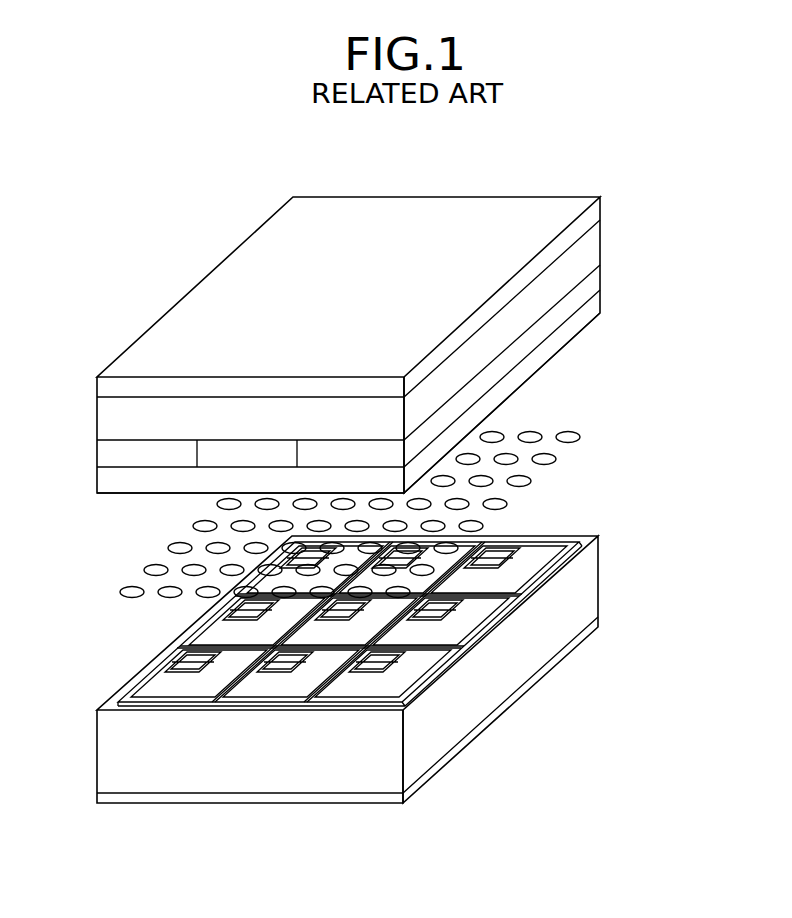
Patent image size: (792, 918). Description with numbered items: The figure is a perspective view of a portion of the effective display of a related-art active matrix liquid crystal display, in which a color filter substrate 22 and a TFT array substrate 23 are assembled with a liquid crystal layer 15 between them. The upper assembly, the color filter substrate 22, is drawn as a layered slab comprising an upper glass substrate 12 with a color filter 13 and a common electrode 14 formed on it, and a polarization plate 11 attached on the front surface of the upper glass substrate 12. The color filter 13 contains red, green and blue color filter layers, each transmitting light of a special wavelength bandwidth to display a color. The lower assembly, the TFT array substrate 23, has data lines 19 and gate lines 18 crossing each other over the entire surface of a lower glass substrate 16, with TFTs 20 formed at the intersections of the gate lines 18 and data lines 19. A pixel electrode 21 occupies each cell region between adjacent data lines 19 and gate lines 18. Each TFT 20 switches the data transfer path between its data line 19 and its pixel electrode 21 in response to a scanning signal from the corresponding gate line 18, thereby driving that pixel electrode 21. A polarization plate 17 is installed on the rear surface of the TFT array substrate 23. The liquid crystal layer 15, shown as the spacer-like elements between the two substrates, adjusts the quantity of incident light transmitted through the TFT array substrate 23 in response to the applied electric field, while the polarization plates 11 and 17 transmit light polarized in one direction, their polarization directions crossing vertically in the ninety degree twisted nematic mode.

The polarization plate 11 is at (600, 205).
The upper glass substrate 12 is at (600, 243).
The color filter 13 is at (600, 275).
The common electrode 14 is at (600, 303).
The liquid crystal layer 15 is at (580, 437).
The lower glass substrate 16 is at (598, 582).
The polarization plate 17 is at (598, 622).
The gate line 18 is at (519, 597).
The data line 19 is at (313, 702).
The TFT 20 is at (383, 662).
The pixel electrode 21 is at (437, 667).
The color filter substrate 22 is at (676, 219).
The TFT array substrate 23 is at (412, 693).